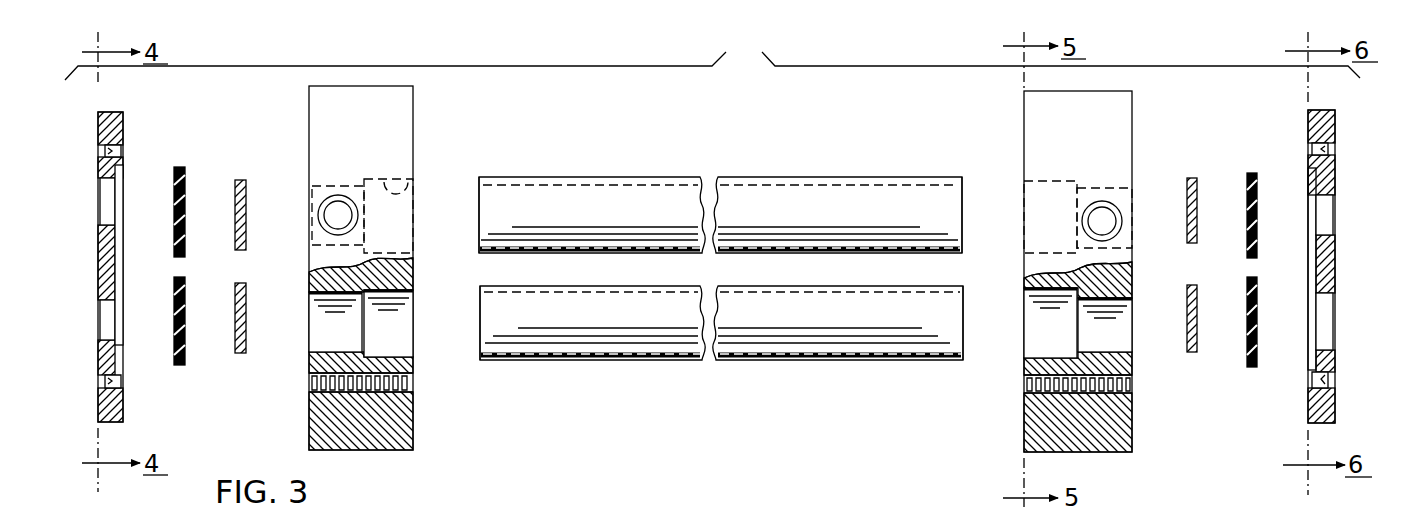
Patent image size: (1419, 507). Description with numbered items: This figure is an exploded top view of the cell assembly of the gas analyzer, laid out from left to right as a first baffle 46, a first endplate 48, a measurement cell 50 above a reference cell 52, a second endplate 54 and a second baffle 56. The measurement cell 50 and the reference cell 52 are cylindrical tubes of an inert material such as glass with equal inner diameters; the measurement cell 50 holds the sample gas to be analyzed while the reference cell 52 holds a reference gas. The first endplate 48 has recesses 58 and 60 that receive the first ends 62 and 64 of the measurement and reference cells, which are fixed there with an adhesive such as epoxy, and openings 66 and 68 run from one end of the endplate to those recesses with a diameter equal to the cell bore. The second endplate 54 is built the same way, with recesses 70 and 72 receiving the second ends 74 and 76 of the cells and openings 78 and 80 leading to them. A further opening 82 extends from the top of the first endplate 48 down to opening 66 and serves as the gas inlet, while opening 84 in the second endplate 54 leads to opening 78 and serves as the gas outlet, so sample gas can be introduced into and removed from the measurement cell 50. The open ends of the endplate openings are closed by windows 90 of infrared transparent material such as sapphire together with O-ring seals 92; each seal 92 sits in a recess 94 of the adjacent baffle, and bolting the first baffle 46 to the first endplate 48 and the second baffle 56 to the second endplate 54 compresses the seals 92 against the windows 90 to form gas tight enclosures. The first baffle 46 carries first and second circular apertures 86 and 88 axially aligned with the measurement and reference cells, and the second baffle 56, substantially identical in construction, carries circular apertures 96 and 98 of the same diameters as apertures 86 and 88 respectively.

The first baffle 46 is at (105, 118).
The first endplate 48 is at (395, 110).
The measurement cell 50 is at (760, 195).
The reference cell 52 is at (805, 345).
The second endplate 54 is at (1090, 108).
The second baffle 56 is at (1318, 112).
The recess 58 is at (413, 190).
The recess 60 is at (400, 352).
The first end of measurement cell 62 is at (480, 195).
The first end of reference cell 64 is at (485, 330).
The opening 66 is at (312, 198).
The opening 68 is at (320, 345).
The recess 70 is at (1045, 185).
The recess 72 is at (1055, 358).
The second end of measurement cell 74 is at (965, 192).
The second end of reference cell 76 is at (960, 308).
The opening 78 is at (1122, 190).
The opening 80 is at (1105, 352).
The opening 82 is at (338, 215).
The opening 84 is at (1102, 221).
The first circular aperture 86 is at (104, 226).
The second circular aperture 88 is at (104, 322).
The window 90 is at (240, 180).
The O-ring seal 92 is at (180, 170).
The recess 94 is at (118, 166).
The circular aperture 96 is at (1322, 345).
The circular aperture 98 is at (1320, 232).